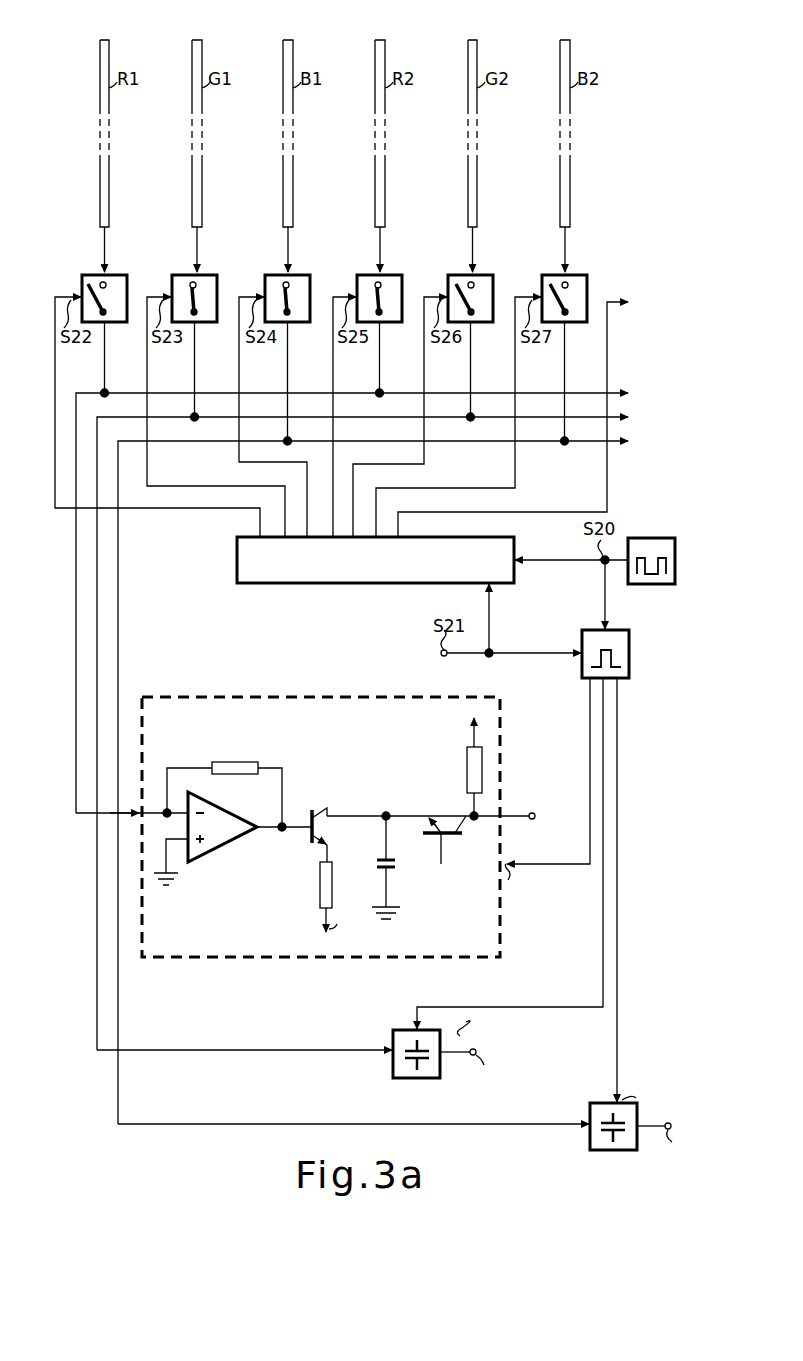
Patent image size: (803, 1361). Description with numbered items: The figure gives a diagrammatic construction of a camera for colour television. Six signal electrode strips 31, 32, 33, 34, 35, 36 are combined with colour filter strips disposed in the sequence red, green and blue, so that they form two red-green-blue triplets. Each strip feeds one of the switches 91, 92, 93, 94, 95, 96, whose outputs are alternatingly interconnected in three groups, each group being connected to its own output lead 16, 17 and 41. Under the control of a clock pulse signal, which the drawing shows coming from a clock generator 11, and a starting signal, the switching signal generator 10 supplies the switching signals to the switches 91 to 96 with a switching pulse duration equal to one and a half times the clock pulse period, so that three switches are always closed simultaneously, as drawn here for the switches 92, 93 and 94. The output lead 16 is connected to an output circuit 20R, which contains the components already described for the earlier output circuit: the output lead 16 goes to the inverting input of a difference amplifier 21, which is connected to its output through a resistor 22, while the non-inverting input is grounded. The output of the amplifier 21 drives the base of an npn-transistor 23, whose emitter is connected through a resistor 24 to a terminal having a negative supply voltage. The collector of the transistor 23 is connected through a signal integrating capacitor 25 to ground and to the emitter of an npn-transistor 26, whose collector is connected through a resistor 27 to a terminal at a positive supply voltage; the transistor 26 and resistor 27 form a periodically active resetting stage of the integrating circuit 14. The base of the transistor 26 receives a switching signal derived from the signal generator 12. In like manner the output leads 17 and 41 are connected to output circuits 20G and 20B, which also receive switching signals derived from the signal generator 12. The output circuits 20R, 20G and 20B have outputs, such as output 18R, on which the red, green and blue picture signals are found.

The signal electrode strip 31 is at (109, 190).
The signal electrode strip 32 is at (202, 190).
The signal electrode strip 33 is at (293, 190).
The signal electrode strip 34 is at (385, 190).
The signal electrode strip 35 is at (477, 190).
The signal electrode strip 36 is at (570, 190).
The switch 91 is at (84, 274).
The switch 92 is at (176, 274).
The switch 93 is at (267, 274).
The switch 94 is at (359, 274).
The switch 95 is at (452, 274).
The switch 96 is at (545, 274).
The switching signal generator 10 is at (236, 550).
The clock generator 11 is at (651, 538).
The signal generator 12 is at (629, 648).
The integrating circuit 14 is at (365, 831).
The output lead 16 is at (192, 393).
The output lead 17 is at (220, 417).
The output lead 41 is at (193, 441).
The output circuit 20R is at (272, 697).
The output circuit 20G is at (391, 1033).
The output circuit 20B is at (588, 1112).
The difference amplifier 21 is at (230, 843).
The resistor 22 is at (236, 762).
The npn-transistor 23 is at (309, 812).
The resistor 24 is at (320, 884).
The signal integrating capacitor 25 is at (396, 862).
The npn-transistor 26 is at (450, 836).
The resistor 27 is at (467, 772).
The output 18R is at (532, 812).